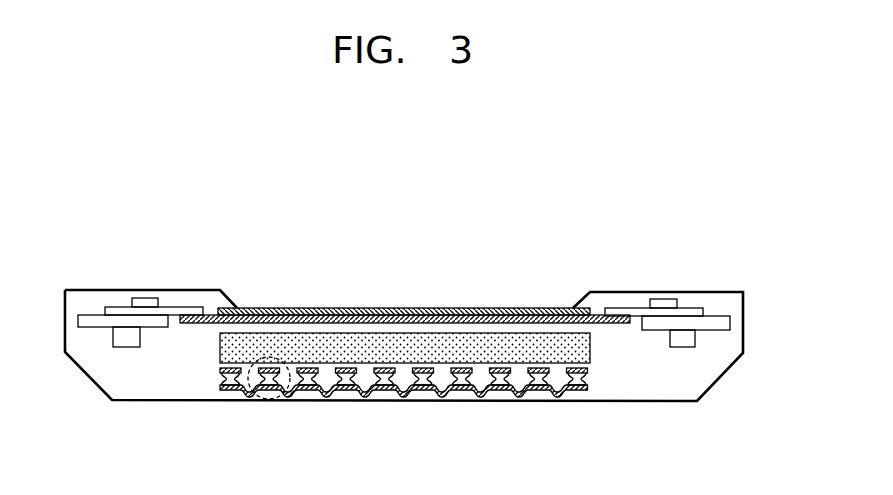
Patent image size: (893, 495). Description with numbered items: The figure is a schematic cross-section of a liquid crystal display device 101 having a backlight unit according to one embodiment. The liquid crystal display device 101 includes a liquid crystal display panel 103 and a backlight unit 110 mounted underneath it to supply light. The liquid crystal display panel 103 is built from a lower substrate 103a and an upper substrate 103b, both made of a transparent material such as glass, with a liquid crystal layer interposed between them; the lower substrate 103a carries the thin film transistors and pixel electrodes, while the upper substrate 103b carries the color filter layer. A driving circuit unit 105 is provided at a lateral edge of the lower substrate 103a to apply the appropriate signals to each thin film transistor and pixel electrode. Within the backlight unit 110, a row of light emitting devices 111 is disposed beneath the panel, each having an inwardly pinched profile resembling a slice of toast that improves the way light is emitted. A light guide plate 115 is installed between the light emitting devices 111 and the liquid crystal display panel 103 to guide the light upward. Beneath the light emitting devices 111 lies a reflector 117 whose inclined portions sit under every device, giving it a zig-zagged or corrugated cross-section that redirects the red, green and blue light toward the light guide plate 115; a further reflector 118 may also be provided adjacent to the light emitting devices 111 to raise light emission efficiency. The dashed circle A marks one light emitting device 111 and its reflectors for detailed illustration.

The liquid crystal display device 101 is at (65, 266).
The liquid crystal display panel 103 is at (405, 285).
The lower substrate 103a is at (341, 311).
The upper substrate 103b is at (414, 318).
The driving circuit unit 105 is at (712, 310).
The backlight unit 110 is at (432, 359).
The light emitting device 111 is at (232, 378).
The light guide plate 115 is at (527, 338).
The reflector 117 is at (345, 401).
The reflector 118 is at (427, 401).
The detail region A is at (274, 401).